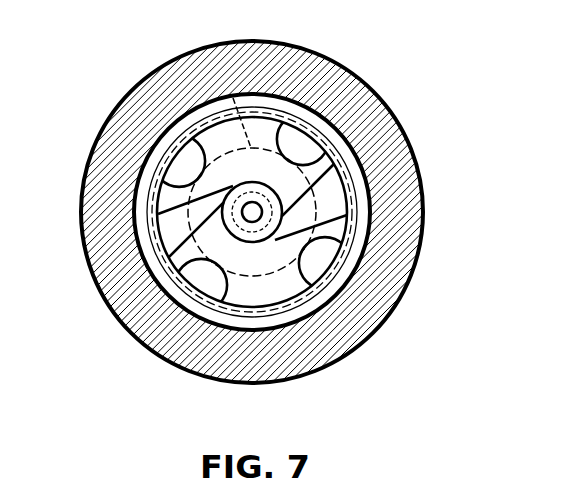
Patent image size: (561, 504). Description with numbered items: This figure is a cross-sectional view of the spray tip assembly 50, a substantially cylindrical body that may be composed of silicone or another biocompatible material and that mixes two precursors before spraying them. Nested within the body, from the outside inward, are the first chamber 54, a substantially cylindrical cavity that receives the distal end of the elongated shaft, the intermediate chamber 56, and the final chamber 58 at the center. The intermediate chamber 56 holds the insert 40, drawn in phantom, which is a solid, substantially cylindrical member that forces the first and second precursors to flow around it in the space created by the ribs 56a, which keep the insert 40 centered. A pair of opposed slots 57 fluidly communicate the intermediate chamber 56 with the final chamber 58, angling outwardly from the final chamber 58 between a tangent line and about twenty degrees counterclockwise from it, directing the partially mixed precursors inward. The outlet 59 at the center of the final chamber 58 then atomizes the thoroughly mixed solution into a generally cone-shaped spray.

The insert 40 is at (233, 98).
The spray tip assembly 50 is at (420, 238).
The first chamber 54 is at (323, 110).
The intermediate chamber 56 is at (250, 113).
The ribs 56a is at (320, 262).
The slots 57 is at (332, 193).
The final chamber 58 is at (263, 182).
The outlet 59 is at (252, 222).